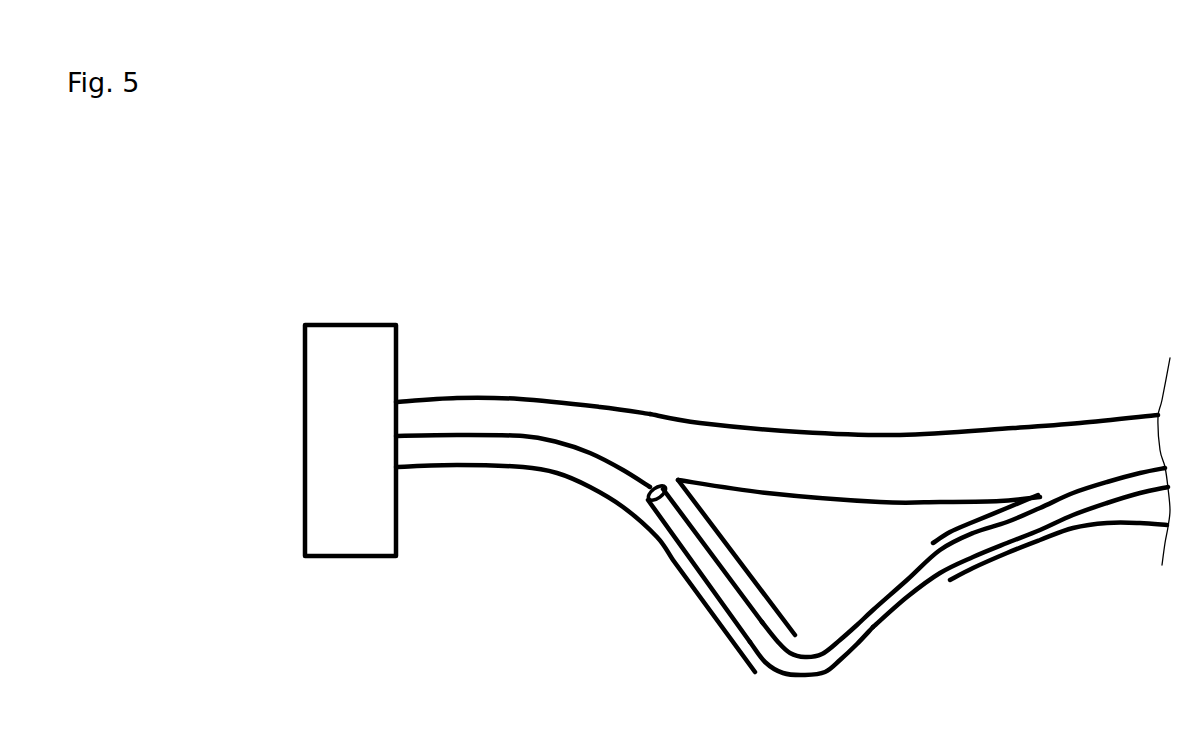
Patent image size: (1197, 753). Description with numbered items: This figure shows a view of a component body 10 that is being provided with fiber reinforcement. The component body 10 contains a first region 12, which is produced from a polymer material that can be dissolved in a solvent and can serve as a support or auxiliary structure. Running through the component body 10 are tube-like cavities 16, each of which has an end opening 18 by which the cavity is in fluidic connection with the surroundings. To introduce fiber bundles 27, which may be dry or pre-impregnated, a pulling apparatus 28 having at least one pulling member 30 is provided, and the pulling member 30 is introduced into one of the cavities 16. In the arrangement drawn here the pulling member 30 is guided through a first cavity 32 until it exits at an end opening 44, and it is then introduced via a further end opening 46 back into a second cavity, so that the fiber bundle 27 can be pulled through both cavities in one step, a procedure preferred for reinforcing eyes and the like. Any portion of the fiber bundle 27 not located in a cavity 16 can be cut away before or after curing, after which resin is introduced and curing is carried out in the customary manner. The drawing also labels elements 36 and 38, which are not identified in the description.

The component body 10 is at (680, 256).
The first region 12 is at (1065, 424).
The tube-like cavities 16 is at (868, 460).
The end opening 18 is at (400, 420).
The fiber bundles 27 is at (890, 607).
The pulling apparatus 28 is at (348, 528).
The pulling member 30 is at (547, 436).
The first cavity 32 is at (663, 443).
The inner catheter 36 is at (723, 625).
The distal segment 38 is at (1128, 512).
The end opening 44 is at (762, 663).
The further end opening 46 is at (925, 552).